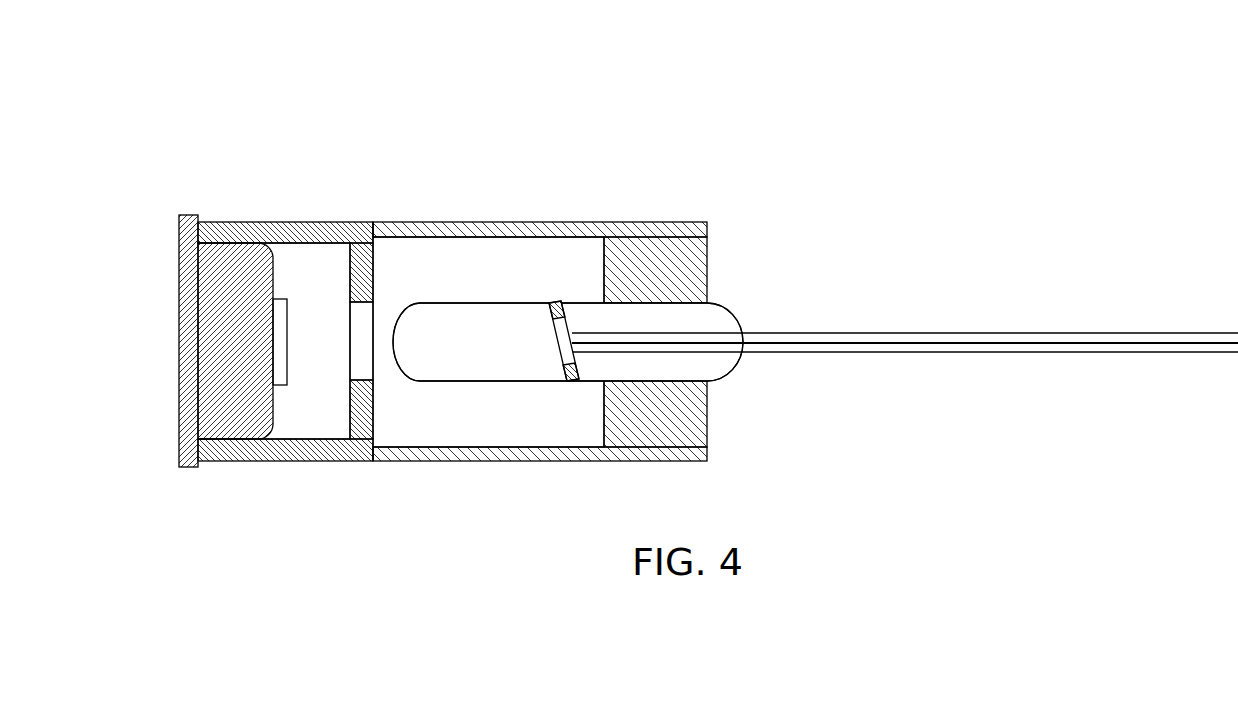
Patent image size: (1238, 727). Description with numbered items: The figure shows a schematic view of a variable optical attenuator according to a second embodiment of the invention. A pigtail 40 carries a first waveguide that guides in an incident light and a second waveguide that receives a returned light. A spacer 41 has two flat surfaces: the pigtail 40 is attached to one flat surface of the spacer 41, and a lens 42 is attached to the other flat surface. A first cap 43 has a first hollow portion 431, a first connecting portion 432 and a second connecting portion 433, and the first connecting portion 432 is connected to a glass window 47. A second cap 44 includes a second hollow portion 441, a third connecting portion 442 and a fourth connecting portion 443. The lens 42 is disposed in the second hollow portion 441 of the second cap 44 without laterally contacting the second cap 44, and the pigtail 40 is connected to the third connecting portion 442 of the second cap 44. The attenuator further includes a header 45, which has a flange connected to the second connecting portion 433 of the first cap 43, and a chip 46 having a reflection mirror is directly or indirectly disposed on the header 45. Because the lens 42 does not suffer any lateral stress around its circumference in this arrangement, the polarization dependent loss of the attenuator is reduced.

The pigtail 40 is at (720, 317).
The spacer 41 is at (554, 300).
The lens 42 is at (465, 352).
The first cap 43 is at (305, 342).
The first hollow portion 431 is at (313, 415).
The first connecting portion 432 is at (366, 270).
The second connecting portion 433 is at (255, 230).
The second cap 44 is at (582, 252).
The second hollow portion 441 is at (510, 248).
The third connecting portion 442 is at (688, 248).
The fourth connecting portion 443 is at (422, 230).
The header 45 is at (220, 388).
The chip 46 is at (277, 335).
The glass window 47 is at (365, 352).